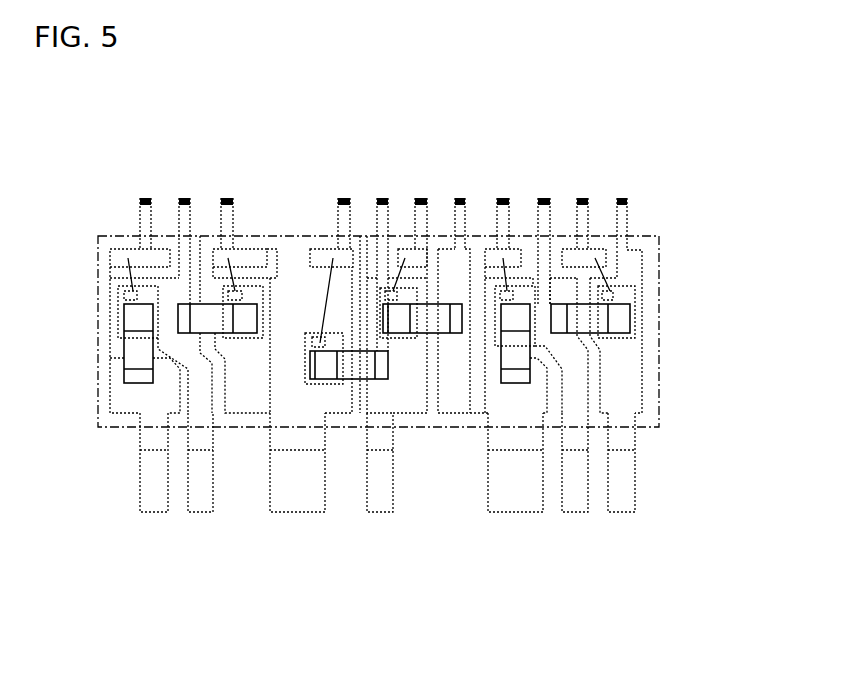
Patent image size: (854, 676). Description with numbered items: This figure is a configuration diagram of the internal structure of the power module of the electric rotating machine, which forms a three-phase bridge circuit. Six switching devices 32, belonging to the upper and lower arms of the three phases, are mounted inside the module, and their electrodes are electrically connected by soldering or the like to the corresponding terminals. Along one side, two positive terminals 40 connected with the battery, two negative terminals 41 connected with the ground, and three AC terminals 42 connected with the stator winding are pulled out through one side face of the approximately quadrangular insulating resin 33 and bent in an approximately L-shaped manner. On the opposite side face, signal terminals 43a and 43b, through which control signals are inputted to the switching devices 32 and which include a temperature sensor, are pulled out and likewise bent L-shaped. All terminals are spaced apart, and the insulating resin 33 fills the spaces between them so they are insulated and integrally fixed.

The switching device 32 is at (150, 297).
The insulating resin 33 is at (658, 345).
The positive terminal 40 is at (300, 513).
The negative terminal 41 is at (157, 513).
The AC terminal 42 is at (205, 513).
The signal terminal 43a is at (593, 197).
The signal terminal 43b is at (622, 197).